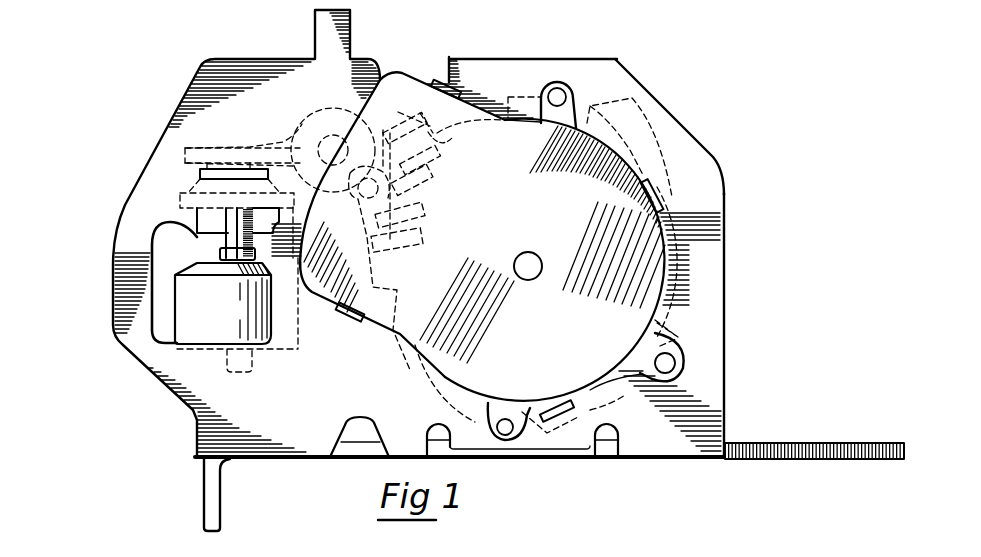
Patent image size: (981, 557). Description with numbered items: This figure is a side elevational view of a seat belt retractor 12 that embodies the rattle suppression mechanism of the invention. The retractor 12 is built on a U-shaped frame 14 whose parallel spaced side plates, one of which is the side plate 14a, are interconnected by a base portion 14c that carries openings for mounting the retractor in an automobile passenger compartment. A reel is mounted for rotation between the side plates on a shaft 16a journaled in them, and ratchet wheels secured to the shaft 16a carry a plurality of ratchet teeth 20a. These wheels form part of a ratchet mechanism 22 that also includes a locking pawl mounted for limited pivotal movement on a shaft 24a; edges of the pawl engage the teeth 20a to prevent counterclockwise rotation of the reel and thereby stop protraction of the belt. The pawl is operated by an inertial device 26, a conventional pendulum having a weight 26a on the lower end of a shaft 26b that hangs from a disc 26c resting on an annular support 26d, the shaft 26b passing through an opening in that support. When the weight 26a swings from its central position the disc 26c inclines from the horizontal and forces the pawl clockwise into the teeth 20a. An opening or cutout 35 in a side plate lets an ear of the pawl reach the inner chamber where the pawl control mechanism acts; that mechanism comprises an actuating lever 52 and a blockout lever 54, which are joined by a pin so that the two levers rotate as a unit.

The seat belt retractor 12 is at (718, 96).
The U-shaped frame 14 is at (714, 154).
The side plate 14a is at (621, 67).
The base portion 14c is at (788, 443).
The shaft 16a is at (528, 252).
The ratchet teeth 20a is at (631, 98).
The ratchet mechanism 22 is at (418, 96).
The shaft 24a is at (325, 146).
The inertial device 26 is at (166, 318).
The weight 26a is at (228, 317).
The shaft 26b is at (227, 233).
The disc 26c is at (200, 173).
The annular support 26d is at (187, 194).
The opening or cutout 35 is at (448, 73).
The actuating lever 52 is at (364, 250).
The blockout lever 54 is at (428, 141).